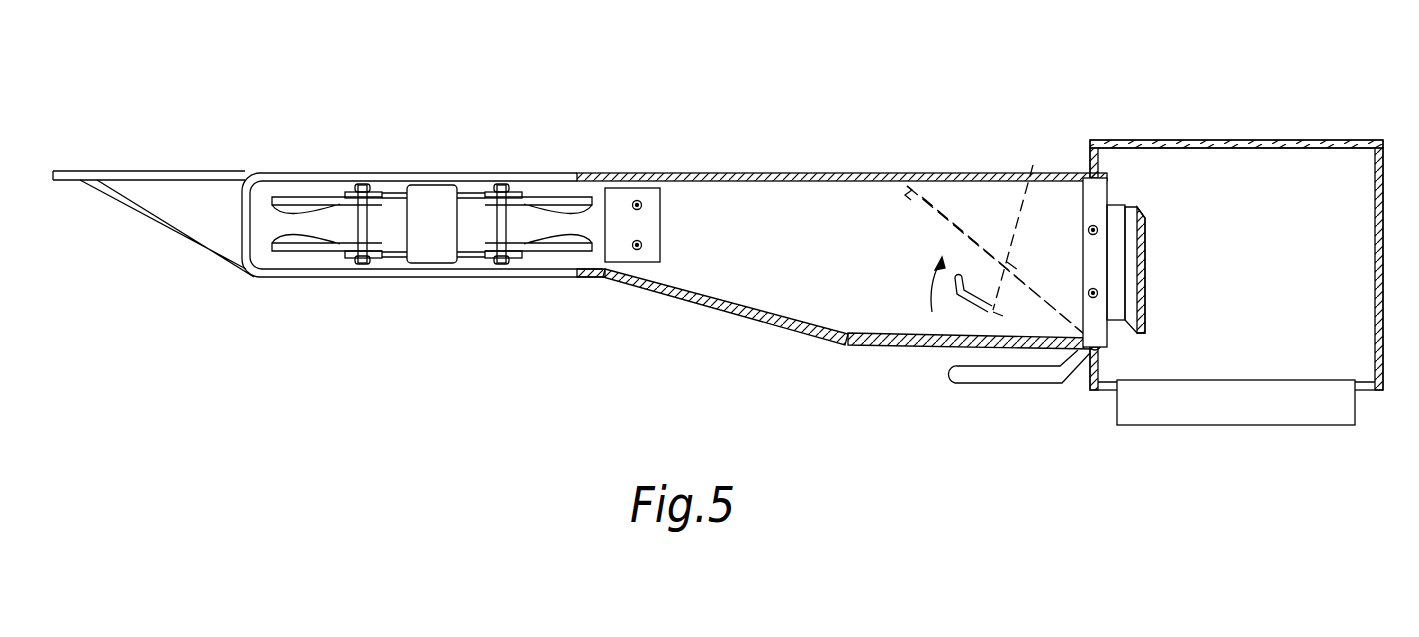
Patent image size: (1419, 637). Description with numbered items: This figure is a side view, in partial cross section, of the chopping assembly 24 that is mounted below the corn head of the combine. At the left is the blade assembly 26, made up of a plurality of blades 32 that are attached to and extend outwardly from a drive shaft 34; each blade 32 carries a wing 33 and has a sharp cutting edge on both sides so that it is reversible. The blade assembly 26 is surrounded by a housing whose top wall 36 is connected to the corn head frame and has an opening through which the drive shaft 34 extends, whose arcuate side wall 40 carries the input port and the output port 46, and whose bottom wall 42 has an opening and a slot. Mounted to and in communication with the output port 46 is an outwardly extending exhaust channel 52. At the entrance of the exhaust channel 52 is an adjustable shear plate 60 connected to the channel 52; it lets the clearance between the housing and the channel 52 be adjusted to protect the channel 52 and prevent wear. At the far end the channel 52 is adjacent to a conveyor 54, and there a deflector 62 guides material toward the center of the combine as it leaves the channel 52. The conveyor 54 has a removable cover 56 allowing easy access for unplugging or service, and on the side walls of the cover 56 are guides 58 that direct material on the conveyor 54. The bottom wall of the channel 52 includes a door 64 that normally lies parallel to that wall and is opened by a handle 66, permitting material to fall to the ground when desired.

The chopping assembly 24 is at (390, 58).
The blade assembly 26 is at (258, 228).
The blades 32 is at (321, 205).
The wing 33 is at (296, 205).
The drive shaft 34 is at (432, 185).
The top wall 36 is at (272, 173).
The arcuate side wall 40 is at (607, 264).
The bottom wall 42 is at (272, 274).
The output port 46 is at (590, 120).
The exhaust channel 52 is at (963, 175).
The conveyor 54 is at (1290, 425).
The removable cover 56 is at (1302, 140).
The guides 58 is at (1117, 210).
The adjustable shear plate 60 is at (643, 188).
The deflector 62 is at (1137, 262).
The door 64 is at (935, 200).
The handle 66 is at (1034, 162).